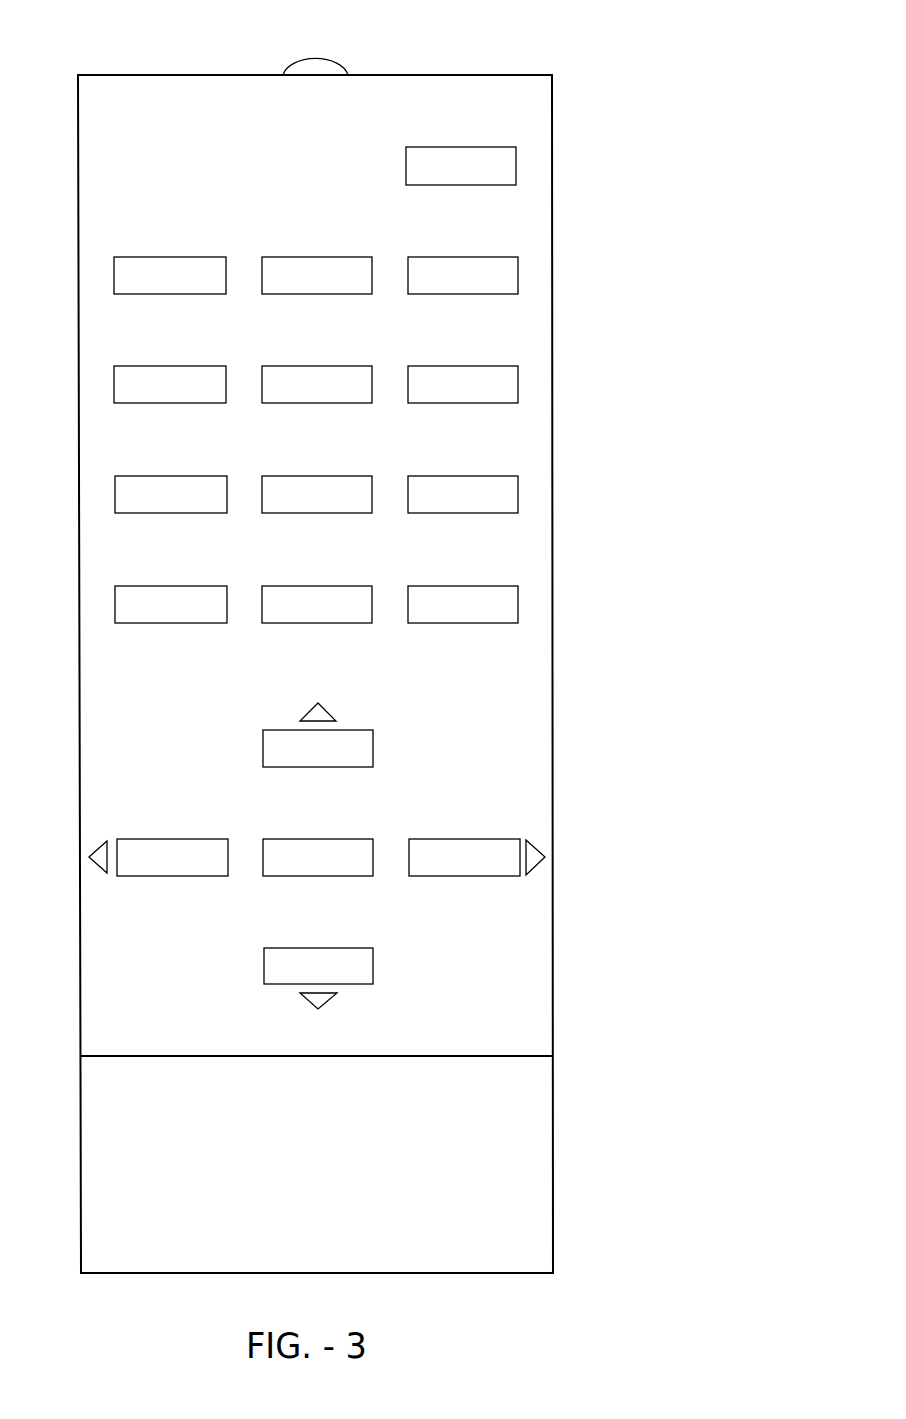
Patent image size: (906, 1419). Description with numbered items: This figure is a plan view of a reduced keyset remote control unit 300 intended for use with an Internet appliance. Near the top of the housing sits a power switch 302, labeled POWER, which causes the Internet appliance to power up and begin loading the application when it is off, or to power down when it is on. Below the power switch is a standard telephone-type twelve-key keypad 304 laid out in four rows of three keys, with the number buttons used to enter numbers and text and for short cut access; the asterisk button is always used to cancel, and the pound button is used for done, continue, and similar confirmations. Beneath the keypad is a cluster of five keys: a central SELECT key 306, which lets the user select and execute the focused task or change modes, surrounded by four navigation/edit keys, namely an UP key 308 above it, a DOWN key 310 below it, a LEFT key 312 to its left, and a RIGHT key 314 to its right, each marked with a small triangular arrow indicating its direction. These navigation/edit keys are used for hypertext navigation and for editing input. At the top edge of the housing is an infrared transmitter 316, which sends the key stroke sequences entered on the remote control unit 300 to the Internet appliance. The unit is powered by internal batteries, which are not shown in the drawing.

The remote control unit 300 is at (630, 1033).
The power switch 302 is at (516, 165).
The keypad 304 is at (588, 253).
The SELECT key 306 is at (357, 876).
The UP key 308 is at (362, 730).
The DOWN key 310 is at (288, 948).
The LEFT key 312 is at (133, 839).
The RIGHT key 314 is at (428, 839).
The infrared transmitter 316 is at (332, 59).